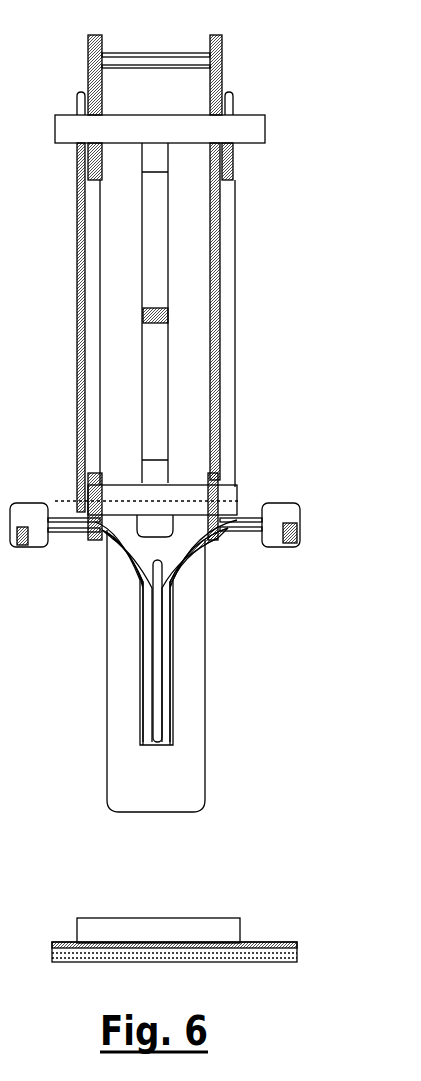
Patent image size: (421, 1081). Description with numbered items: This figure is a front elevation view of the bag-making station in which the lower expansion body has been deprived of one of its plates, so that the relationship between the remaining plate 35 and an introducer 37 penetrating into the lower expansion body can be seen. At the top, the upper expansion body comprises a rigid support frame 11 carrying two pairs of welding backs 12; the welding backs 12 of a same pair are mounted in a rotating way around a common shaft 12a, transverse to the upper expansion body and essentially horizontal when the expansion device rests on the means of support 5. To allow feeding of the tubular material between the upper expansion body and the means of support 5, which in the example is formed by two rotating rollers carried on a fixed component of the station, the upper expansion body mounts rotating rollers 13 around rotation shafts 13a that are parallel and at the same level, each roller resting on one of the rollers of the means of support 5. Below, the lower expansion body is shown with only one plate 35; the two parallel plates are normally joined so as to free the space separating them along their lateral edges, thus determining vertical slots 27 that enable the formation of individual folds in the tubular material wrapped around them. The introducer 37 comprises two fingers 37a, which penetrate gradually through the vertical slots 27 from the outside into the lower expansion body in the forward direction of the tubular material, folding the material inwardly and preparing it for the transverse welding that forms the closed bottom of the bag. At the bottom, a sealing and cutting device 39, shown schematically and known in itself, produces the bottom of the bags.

The rigid support frame 11 is at (233, 230).
The welding backs 12 is at (134, 365).
The common shaft 12a is at (155, 306).
The rotating rollers 13 is at (197, 490).
The rotation shafts 13a is at (65, 500).
The introducer 37 is at (300, 518).
The means of support 5 is at (225, 530).
The fingers 37a is at (177, 557).
The vertical slots 27 is at (187, 737).
The plate 35 is at (205, 778).
The sealing and cutting device 39 is at (240, 932).